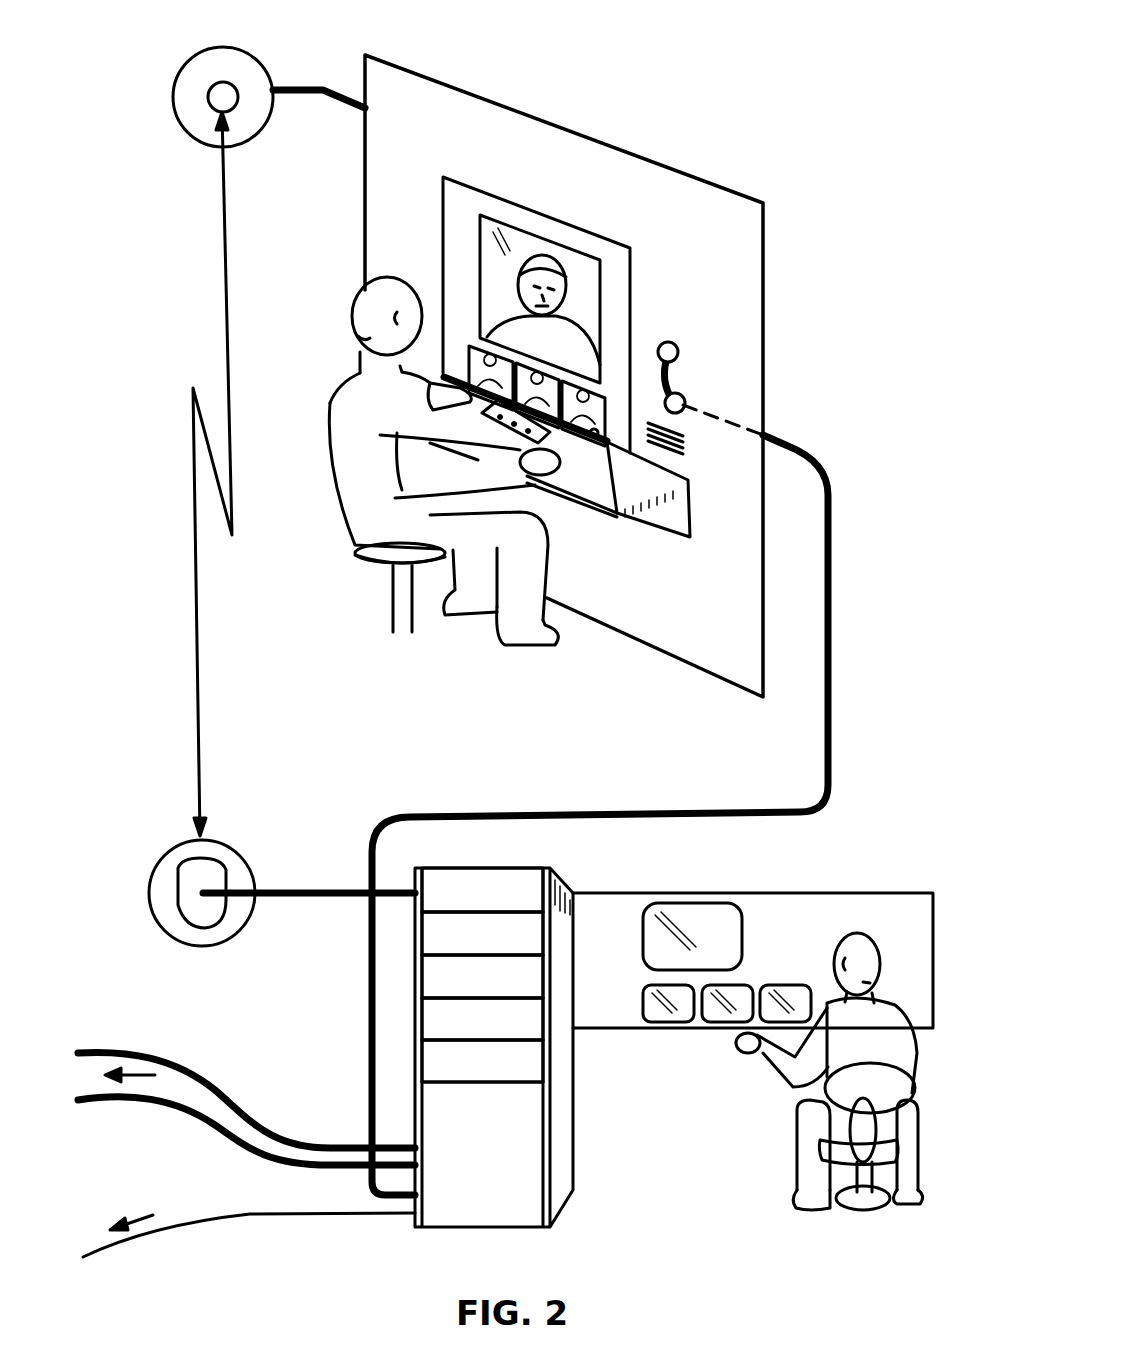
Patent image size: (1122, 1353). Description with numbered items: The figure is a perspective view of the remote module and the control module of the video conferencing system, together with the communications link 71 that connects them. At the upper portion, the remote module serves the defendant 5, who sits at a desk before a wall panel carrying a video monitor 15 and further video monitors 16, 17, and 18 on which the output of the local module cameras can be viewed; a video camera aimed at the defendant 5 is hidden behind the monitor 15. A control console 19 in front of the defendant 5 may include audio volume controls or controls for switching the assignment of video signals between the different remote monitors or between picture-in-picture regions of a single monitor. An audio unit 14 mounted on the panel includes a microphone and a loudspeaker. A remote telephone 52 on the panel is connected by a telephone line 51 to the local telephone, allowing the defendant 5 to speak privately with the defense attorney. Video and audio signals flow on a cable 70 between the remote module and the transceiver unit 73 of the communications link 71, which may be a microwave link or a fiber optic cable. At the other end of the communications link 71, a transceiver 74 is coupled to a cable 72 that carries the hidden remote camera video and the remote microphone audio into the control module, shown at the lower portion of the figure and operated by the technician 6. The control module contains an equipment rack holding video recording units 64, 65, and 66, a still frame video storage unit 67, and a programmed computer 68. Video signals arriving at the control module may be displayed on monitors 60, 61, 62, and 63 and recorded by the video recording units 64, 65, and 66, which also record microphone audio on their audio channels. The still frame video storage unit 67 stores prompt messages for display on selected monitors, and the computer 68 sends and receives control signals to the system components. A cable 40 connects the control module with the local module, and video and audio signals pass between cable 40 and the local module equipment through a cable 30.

The defendant 5 is at (335, 418).
The technician 6 is at (829, 1071).
The audio unit 14 is at (683, 443).
The video monitor 15 is at (600, 287).
The video monitor 16 is at (468, 357).
The video monitor 17 is at (553, 430).
The video monitor 18 is at (593, 430).
The control console 19 is at (407, 465).
The cable 30 is at (213, 1083).
The cable 40 is at (140, 1098).
The telephone line 51 is at (828, 560).
The remote telephone 52 is at (688, 350).
The monitor 60 is at (695, 910).
The monitor 61 is at (660, 1015).
The monitor 62 is at (722, 1015).
The monitor 63 is at (775, 988).
The video recording unit 64 is at (490, 892).
The video recording unit 65 is at (490, 935).
The video recording unit 66 is at (490, 1060).
The still frame video storage unit 67 is at (490, 1020).
The programmed computer 68 is at (490, 978).
The cable 70 is at (297, 98).
The communications link 71 is at (225, 520).
The cable 72 is at (272, 898).
The transceiver unit 73 is at (245, 52).
The transceiver 74 is at (236, 851).